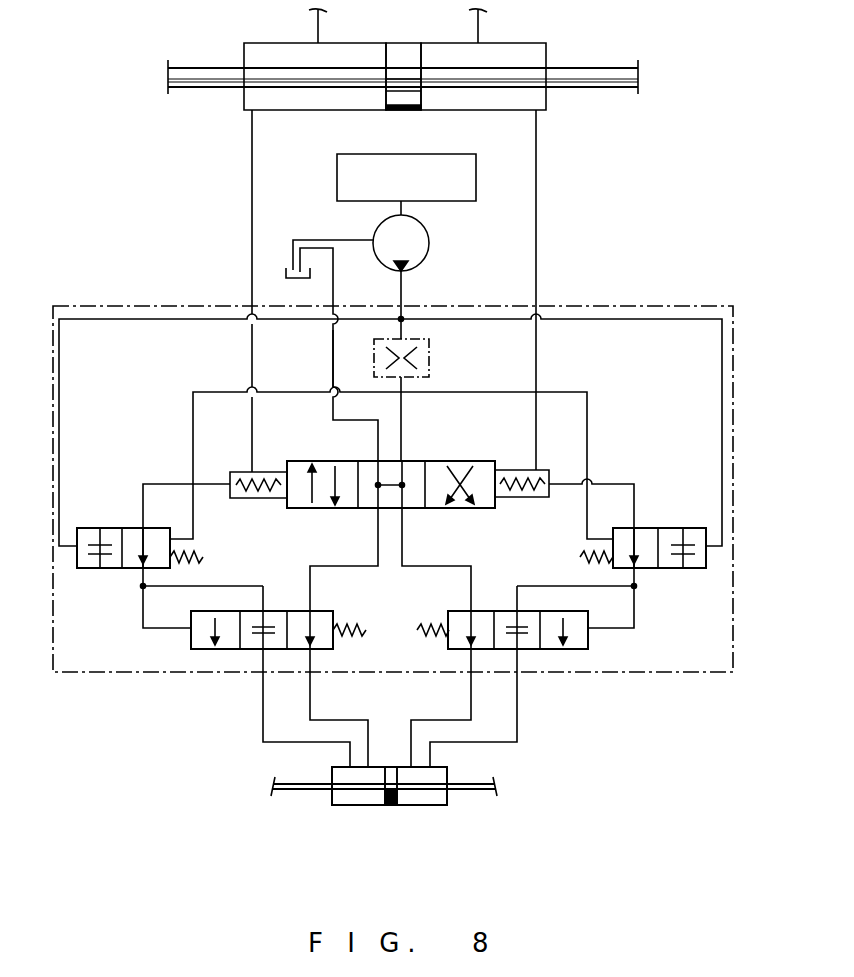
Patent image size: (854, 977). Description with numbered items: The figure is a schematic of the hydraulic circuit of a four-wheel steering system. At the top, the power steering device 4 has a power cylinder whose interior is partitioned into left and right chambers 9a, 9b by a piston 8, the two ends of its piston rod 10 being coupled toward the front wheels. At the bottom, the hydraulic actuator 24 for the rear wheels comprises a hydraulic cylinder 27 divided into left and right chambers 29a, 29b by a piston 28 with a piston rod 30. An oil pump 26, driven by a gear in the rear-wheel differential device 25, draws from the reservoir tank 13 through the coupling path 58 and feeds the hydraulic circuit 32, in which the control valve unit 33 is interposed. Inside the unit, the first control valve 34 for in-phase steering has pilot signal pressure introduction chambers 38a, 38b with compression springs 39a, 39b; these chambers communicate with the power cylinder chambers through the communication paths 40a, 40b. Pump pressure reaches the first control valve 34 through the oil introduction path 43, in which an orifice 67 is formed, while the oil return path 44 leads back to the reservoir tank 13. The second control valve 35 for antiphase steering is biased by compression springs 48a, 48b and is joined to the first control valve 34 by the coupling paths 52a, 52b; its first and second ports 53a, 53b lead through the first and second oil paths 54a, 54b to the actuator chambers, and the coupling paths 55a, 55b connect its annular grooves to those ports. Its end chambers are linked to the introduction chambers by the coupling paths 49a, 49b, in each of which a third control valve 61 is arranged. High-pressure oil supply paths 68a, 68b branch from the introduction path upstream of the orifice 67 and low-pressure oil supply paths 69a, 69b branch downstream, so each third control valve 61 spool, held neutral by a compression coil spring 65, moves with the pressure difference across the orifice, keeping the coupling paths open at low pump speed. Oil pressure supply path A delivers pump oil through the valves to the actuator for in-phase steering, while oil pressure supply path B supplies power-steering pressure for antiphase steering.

The power steering device 4 is at (506, 43).
The piston 8 is at (405, 47).
The left chamber 9a is at (262, 43).
The right chamber 9b is at (540, 43).
The piston rod 10 is at (186, 68).
The reservoir tank 13 is at (286, 274).
The hydraulic actuator 24 is at (443, 805).
The rear-wheel differential device 25 is at (478, 160).
The oil pump 26 is at (430, 246).
The hydraulic cylinder 27 is at (410, 806).
The piston 28 is at (391, 808).
The left chamber 29a is at (346, 805).
The right chamber 29b is at (442, 797).
The piston rod 30 is at (288, 790).
The hydraulic circuit 32 is at (476, 722).
The control valve unit 33 is at (62, 672).
The first control valve 34 is at (480, 461).
The second control valve 35 is at (210, 649).
The left pilot signal pressure introduction chamber 38a is at (274, 472).
The right pilot signal pressure introduction chamber 38b is at (550, 472).
The compression spring 39a is at (256, 498).
The compression spring 39b is at (519, 497).
The communication path 40a is at (252, 222).
The communication path 40b is at (536, 178).
The oil introduction path 43 is at (402, 418).
The oil return path 44 is at (333, 366).
The compression spring 48a is at (350, 624).
The compression spring 48b is at (428, 624).
The coupling path 49a is at (143, 484).
The coupling path 49b is at (634, 484).
The coupling path 52a is at (340, 566).
The coupling path 52b is at (448, 566).
The first port 53a is at (312, 655).
The second port 53b is at (470, 658).
The first oil path 54a is at (263, 726).
The second oil path 54b is at (518, 704).
The coupling path 55a is at (304, 742).
The coupling path 55b is at (518, 742).
The coupling path 58 is at (312, 240).
The third control valve 61 is at (94, 568).
The compression coil spring 65 is at (188, 566).
The orifice 67 is at (430, 357).
The high-pressure oil supply path 68a is at (59, 392).
The high-pressure oil supply path 68b is at (722, 384).
The low-pressure oil supply path 69a is at (193, 392).
The low-pressure oil supply path 69b is at (588, 392).
The oil pressure supply path for in-phase A is at (471, 763).
The oil pressure supply path for antiphase steering B is at (263, 750).